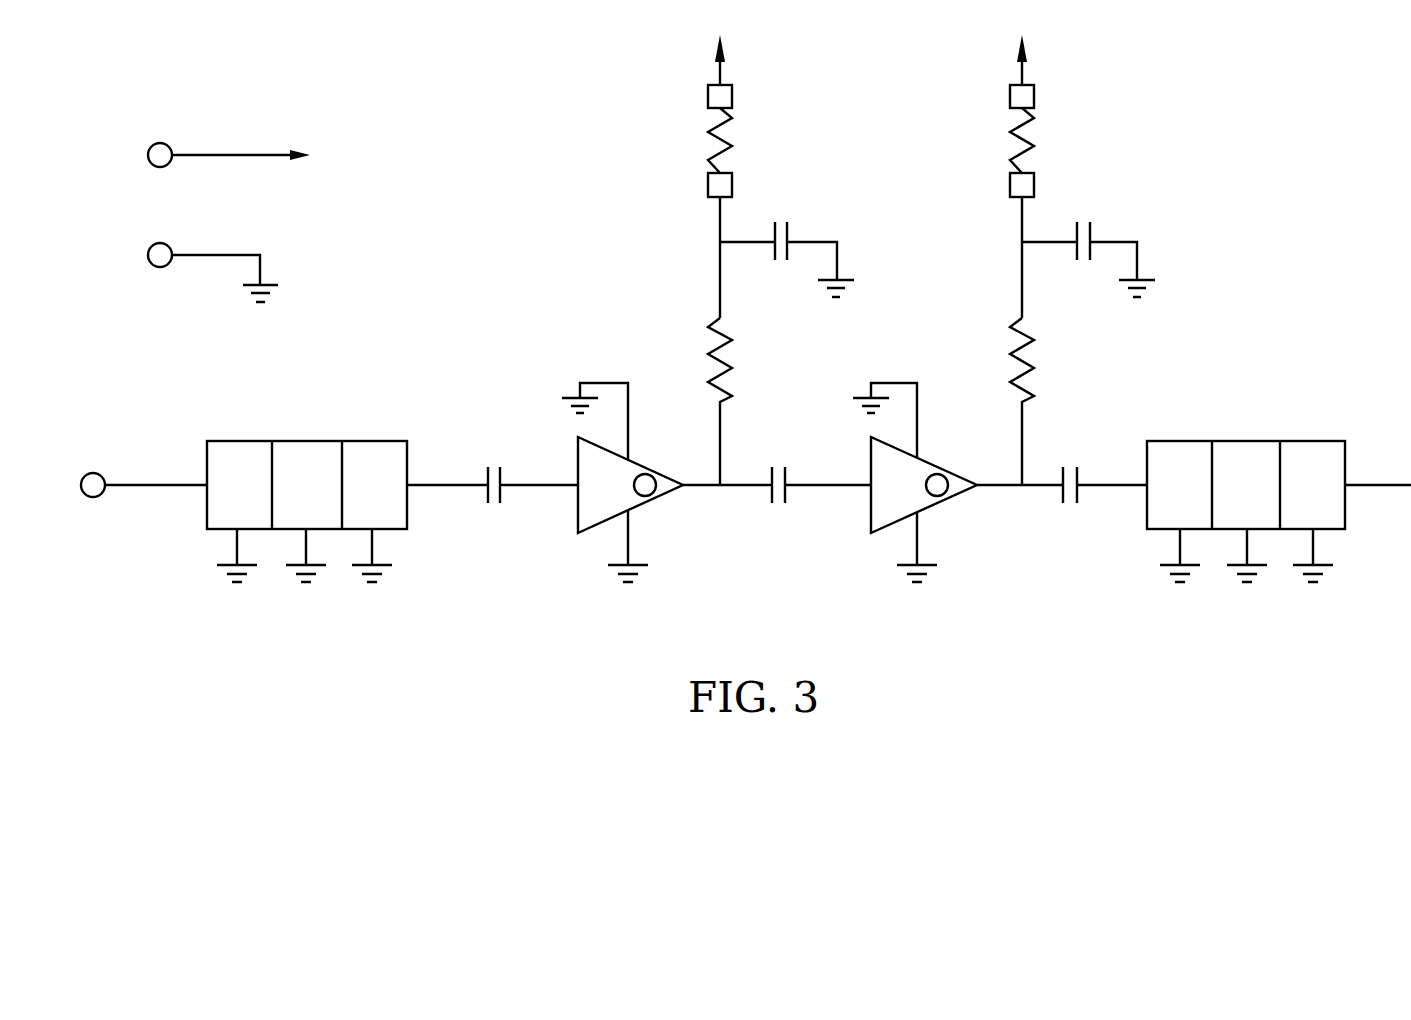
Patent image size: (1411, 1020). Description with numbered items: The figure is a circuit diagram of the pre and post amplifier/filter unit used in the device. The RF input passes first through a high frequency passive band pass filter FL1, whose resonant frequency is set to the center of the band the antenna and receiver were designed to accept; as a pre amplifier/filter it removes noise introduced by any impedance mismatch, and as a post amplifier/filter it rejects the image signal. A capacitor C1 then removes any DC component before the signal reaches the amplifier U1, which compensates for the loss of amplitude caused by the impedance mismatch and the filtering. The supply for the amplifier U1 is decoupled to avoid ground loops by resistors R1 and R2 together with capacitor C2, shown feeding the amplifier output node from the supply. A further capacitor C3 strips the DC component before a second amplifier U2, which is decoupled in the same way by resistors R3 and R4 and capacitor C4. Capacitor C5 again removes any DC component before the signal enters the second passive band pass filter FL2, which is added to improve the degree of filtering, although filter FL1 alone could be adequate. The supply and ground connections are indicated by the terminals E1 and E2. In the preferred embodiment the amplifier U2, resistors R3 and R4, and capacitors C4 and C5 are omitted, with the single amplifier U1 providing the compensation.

The power supply terminal E1 is at (228, 141).
The ground terminal E2 is at (212, 259).
The passive band pass filter FL1 is at (307, 496).
The capacitor C1 is at (492, 469).
The amplifier U1 is at (615, 482).
The resistor R1 is at (697, 176).
The resistor R2 is at (697, 401).
The capacitor C2 is at (787, 247).
The capacitor C3 is at (777, 470).
The amplifier U2 is at (911, 482).
The resistor R3 is at (1000, 176).
The resistor R4 is at (1000, 401).
The capacitor C4 is at (1088, 247).
The capacitor C5 is at (1062, 470).
The passive band pass filter FL2 is at (1279, 495).